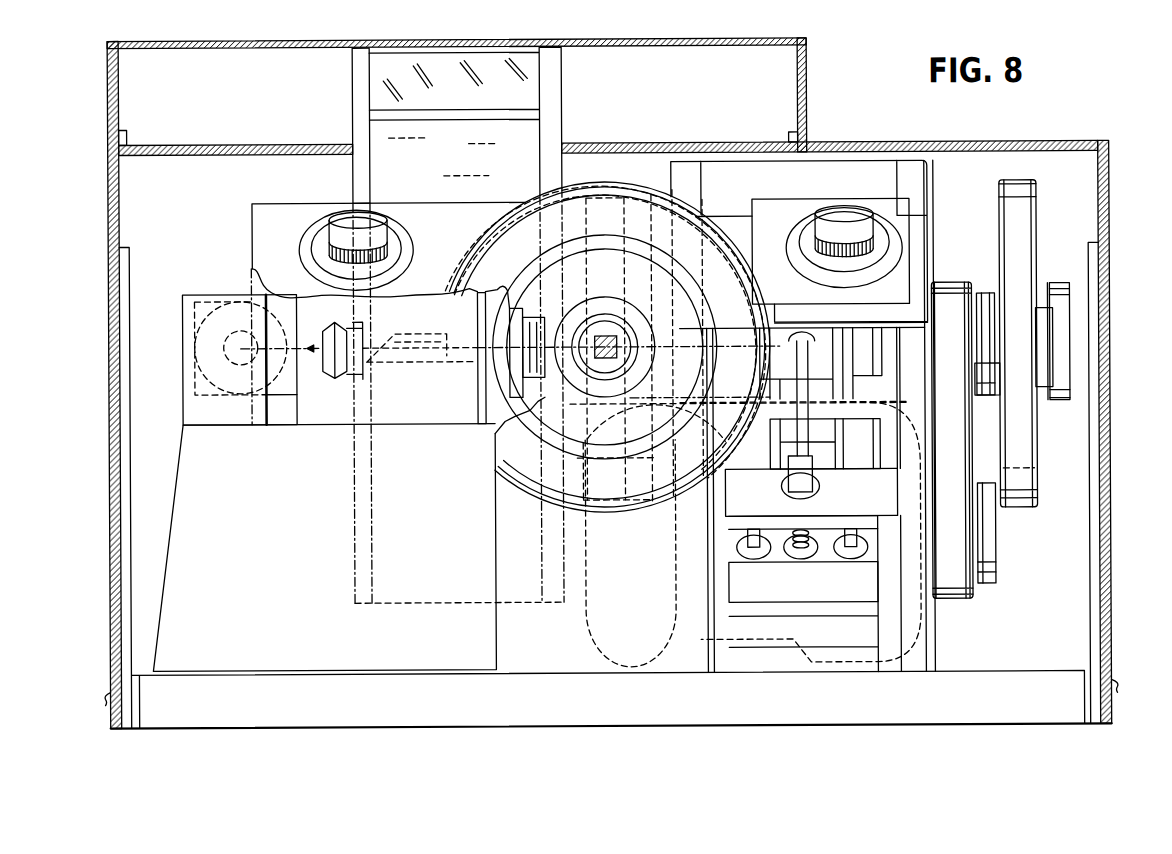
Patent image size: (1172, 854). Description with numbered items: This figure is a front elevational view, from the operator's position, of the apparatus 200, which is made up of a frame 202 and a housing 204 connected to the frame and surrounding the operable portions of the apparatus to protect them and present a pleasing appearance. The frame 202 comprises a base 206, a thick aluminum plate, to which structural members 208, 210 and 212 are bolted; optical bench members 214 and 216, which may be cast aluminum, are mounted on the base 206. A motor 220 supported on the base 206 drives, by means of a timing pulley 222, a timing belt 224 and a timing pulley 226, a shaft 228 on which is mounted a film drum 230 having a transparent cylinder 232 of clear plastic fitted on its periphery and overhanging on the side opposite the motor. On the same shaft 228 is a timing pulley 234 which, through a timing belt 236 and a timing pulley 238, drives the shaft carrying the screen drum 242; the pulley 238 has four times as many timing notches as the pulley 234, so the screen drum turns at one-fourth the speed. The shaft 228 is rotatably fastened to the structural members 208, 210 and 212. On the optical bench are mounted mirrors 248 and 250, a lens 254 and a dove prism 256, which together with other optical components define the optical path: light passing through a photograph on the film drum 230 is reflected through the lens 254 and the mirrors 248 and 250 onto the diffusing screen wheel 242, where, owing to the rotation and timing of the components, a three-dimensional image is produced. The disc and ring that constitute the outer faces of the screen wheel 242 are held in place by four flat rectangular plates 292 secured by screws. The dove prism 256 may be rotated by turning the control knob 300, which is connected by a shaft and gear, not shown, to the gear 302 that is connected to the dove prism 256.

The apparatus 200 is at (1122, 328).
The frame 202 is at (536, 729).
The housing 204 is at (109, 346).
The base 206 is at (355, 729).
The structural member 208 is at (692, 181).
The structural member 210 is at (920, 200).
The structural member 212 is at (832, 189).
The optical bench member 214 is at (273, 584).
The optical bench member 216 is at (193, 336).
The motor 220 is at (640, 576).
The timing pulley 222 is at (972, 594).
The timing belt 224 is at (958, 463).
The timing pulley 226 is at (972, 403).
The shaft 228 is at (706, 343).
The film drum 230 is at (637, 205).
The transparent cylinder 232 is at (600, 187).
The timing pulley 234 is at (1045, 388).
The timing belt 236 is at (1027, 228).
The timing pulley 238 is at (1037, 192).
The screen drum 242 is at (560, 92).
The mirror 248 is at (206, 296).
The mirror 250 is at (277, 292).
The lens 254 is at (512, 306).
The dove prism 256 is at (397, 363).
The flat rectangular plate 292 is at (377, 107).
The control knob 300 is at (387, 250).
The gear 302 is at (328, 324).